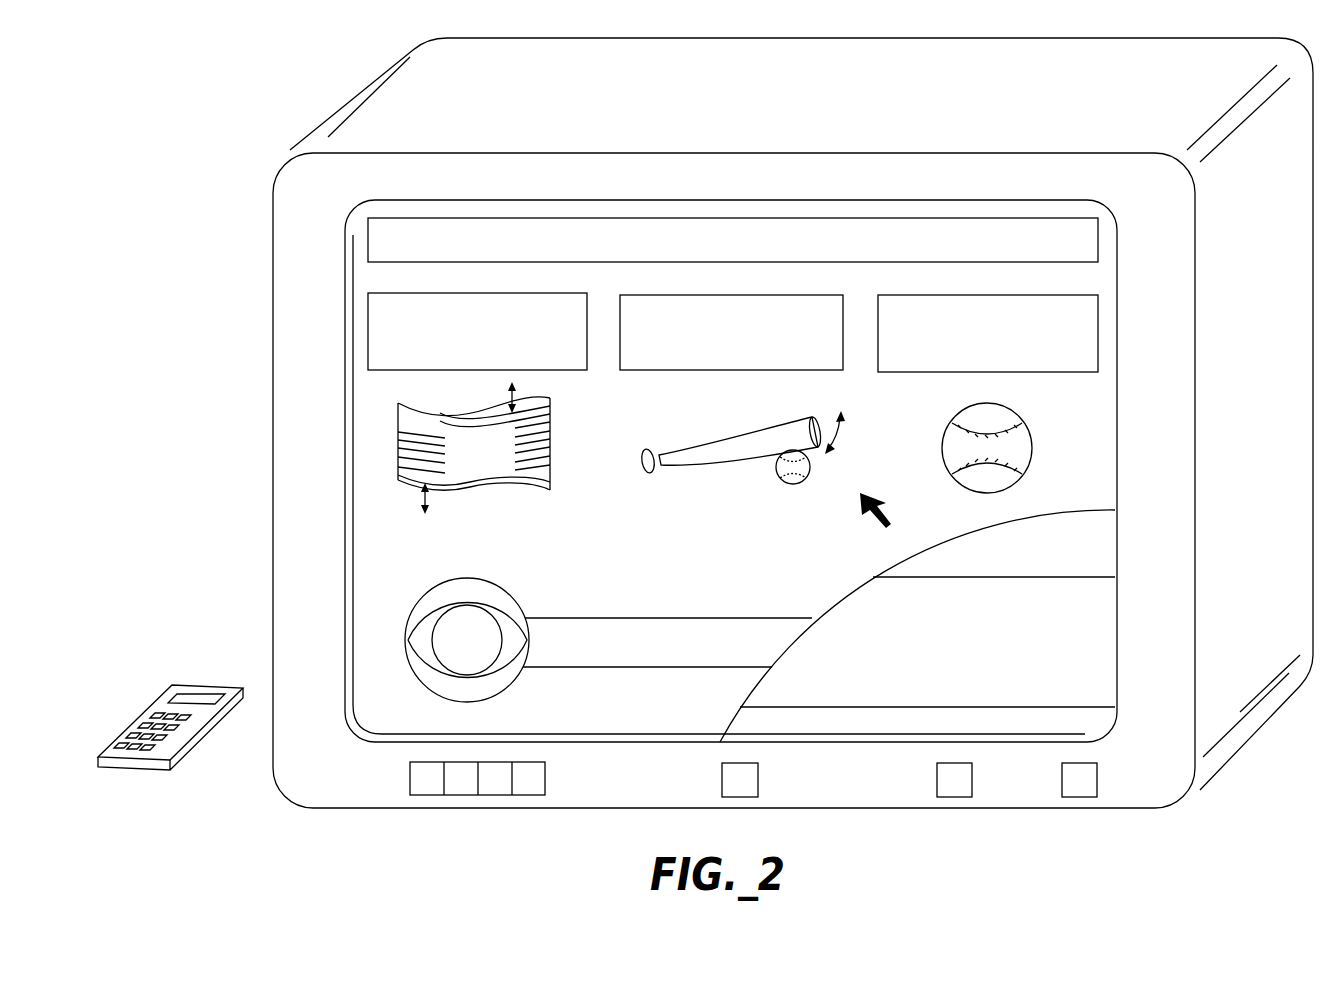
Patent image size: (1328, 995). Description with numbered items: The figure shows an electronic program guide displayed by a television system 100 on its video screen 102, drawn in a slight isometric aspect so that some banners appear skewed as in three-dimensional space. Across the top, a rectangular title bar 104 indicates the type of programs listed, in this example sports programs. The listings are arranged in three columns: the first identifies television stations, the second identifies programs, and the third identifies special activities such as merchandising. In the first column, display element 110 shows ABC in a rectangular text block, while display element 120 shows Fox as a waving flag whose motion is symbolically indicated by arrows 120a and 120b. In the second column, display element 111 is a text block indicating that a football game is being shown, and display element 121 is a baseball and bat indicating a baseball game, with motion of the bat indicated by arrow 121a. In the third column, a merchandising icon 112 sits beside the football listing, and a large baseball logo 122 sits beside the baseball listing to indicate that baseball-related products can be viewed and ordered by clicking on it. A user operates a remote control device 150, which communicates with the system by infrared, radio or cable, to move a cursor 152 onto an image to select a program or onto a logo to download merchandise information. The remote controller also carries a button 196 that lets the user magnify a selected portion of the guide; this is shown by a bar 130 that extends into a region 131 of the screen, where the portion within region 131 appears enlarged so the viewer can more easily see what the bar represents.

The television system 100 is at (247, 286).
The video screen 102 is at (1117, 299).
The title bar 104 is at (565, 217).
The display element 110 is at (368, 330).
The display element 111 is at (688, 372).
The merchandising icon 112 is at (952, 374).
The display element 120 is at (398, 425).
The arrow 120a is at (505, 392).
The arrow 120b is at (432, 500).
The display element 121 is at (732, 458).
The arrow 121a is at (843, 440).
The baseball logo 122 is at (1032, 450).
The bar 130 is at (618, 617).
The region 131 is at (1077, 505).
The remote control device 150 is at (142, 713).
The cursor 152 is at (878, 522).
The button 196 is at (163, 747).